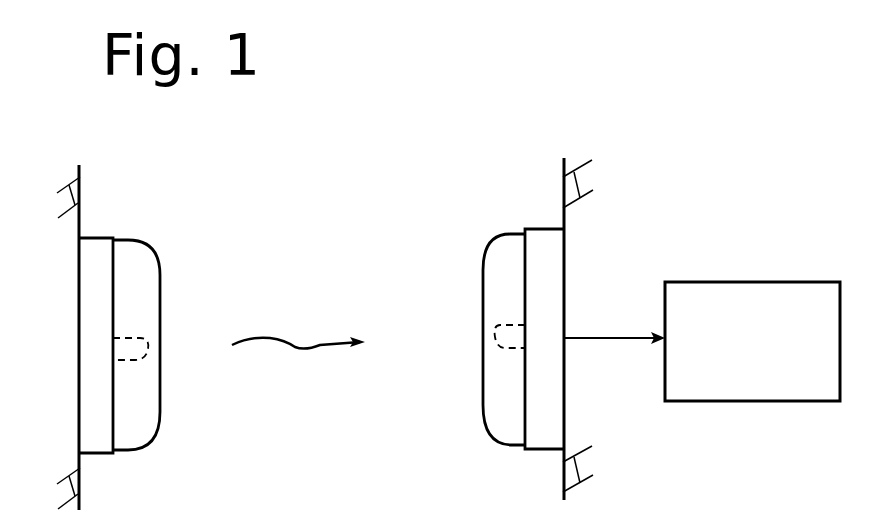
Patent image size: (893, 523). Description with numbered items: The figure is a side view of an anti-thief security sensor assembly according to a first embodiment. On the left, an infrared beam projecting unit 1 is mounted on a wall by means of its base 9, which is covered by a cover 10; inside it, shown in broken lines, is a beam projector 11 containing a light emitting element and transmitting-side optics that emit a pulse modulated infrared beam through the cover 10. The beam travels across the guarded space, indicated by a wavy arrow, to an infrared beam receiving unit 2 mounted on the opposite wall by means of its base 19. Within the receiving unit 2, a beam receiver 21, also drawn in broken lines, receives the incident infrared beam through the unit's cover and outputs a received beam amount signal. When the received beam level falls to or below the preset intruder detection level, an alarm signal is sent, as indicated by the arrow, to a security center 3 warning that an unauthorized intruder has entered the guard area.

The infrared beam projecting unit 1 is at (156, 301).
The infrared beam receiving unit 2 is at (481, 298).
The security center 3 is at (731, 282).
The base 9 is at (92, 272).
The cover 10 is at (160, 270).
The beam projector 11 is at (145, 335).
The base 19 is at (564, 250).
The beam receiver 21 is at (492, 344).